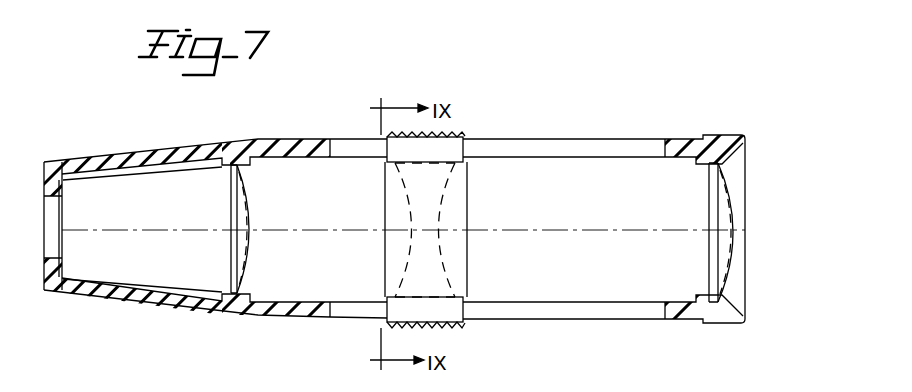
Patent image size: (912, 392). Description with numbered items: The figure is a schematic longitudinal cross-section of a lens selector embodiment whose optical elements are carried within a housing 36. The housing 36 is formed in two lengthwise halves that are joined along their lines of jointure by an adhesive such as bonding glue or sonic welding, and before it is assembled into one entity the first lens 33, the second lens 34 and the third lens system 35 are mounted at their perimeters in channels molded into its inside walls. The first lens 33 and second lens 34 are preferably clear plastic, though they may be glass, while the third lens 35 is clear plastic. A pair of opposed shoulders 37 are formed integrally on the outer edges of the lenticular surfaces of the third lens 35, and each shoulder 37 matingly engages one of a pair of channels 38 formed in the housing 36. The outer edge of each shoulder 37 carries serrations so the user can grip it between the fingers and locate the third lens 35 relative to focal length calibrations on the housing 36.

The first lens 33 is at (231, 189).
The second lens 34 is at (728, 218).
The third lens system 35 is at (438, 189).
The housing 36 is at (264, 143).
The shoulder 37 is at (465, 141).
The channel 38 is at (628, 150).